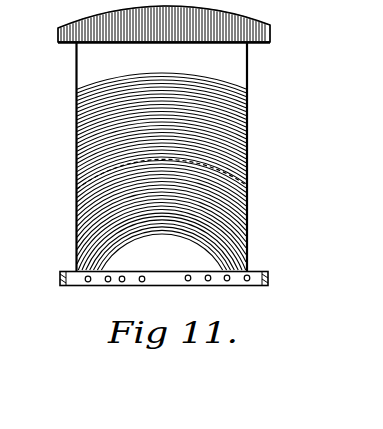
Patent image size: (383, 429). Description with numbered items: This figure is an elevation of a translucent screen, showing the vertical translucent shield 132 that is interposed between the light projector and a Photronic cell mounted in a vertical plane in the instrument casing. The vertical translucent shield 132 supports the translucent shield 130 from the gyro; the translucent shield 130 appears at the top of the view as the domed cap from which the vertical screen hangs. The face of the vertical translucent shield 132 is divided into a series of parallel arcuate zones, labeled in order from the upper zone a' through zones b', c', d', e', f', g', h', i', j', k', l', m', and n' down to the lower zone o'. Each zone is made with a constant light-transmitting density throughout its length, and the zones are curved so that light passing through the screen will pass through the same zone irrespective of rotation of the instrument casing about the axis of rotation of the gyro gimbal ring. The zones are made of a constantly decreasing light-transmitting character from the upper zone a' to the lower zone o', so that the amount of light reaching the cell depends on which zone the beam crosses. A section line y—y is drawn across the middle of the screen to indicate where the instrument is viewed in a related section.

The translucent shield 130 is at (246, 19).
The vertical translucent shield 132 is at (248, 222).
The section line y- y is at (77, 189).
The upper zone a' is at (161, 93).
The layer b' is at (161, 104).
The layer c' is at (161, 116).
The layer d' is at (161, 126).
The layer e' is at (161, 137).
The layer f' is at (161, 149).
The layer g' is at (161, 160).
The layer h' is at (161, 172).
The layer i' is at (161, 184).
The layer j' is at (161, 196).
The layer k' is at (161, 209).
The layer l' is at (161, 223).
The layer m' is at (162, 238).
The layer n' is at (168, 243).
The lower zone o' is at (171, 248).